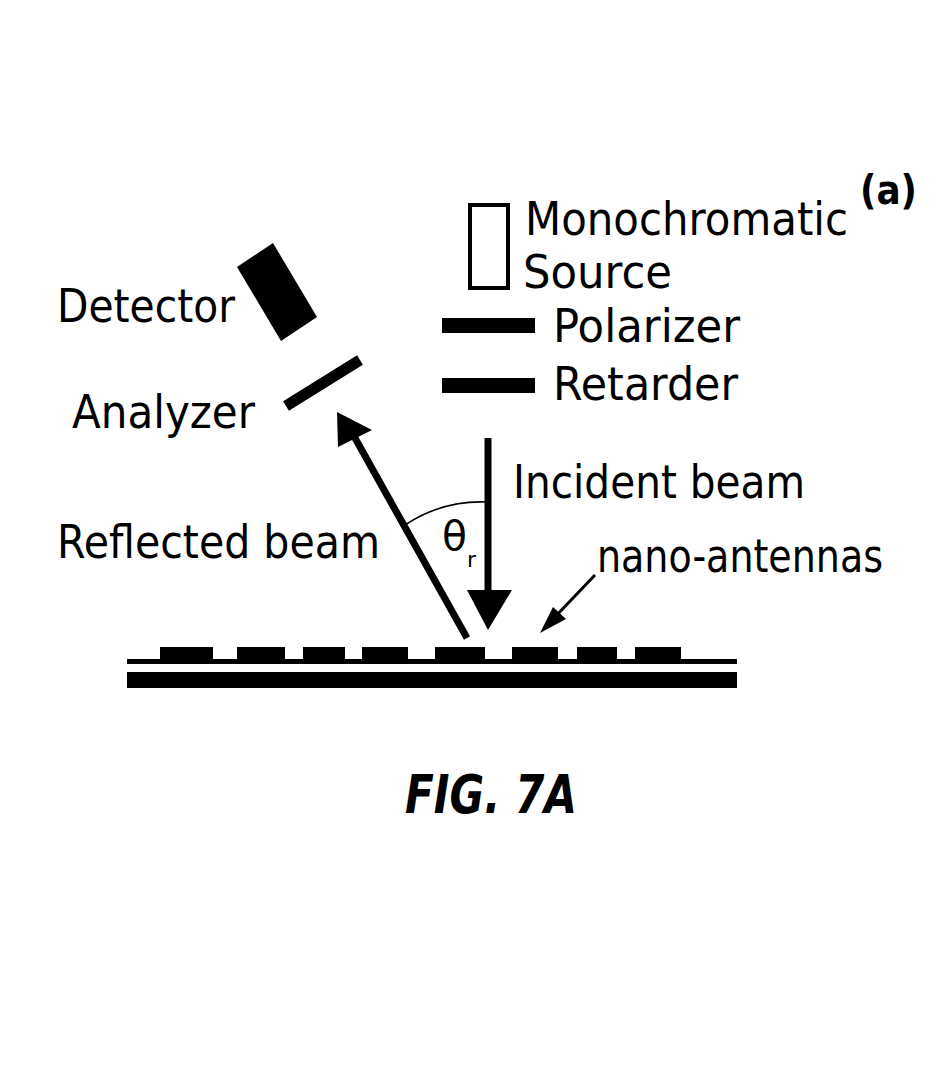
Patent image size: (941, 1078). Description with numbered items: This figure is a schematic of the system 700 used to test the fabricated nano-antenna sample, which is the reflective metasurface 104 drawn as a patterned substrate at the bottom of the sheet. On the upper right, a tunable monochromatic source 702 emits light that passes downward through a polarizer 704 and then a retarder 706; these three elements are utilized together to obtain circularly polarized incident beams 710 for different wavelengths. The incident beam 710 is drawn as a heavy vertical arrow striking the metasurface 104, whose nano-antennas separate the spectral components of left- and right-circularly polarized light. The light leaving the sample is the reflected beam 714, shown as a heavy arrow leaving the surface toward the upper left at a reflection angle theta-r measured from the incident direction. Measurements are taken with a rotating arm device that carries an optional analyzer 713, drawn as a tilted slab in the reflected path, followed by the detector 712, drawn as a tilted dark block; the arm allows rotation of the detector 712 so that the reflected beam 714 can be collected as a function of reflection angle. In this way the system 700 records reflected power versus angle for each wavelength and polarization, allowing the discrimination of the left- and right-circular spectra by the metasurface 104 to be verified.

The system 700 is at (403, 128).
The tunable monochromatic source 702 is at (497, 203).
The polarizer 704 is at (460, 318).
The retarder 706 is at (460, 380).
The incident beam 710 is at (497, 543).
The detector 712 is at (287, 262).
The analyzer 713 is at (303, 390).
The reflected beam 714 is at (363, 465).
The reflective metasurface 104 is at (737, 668).